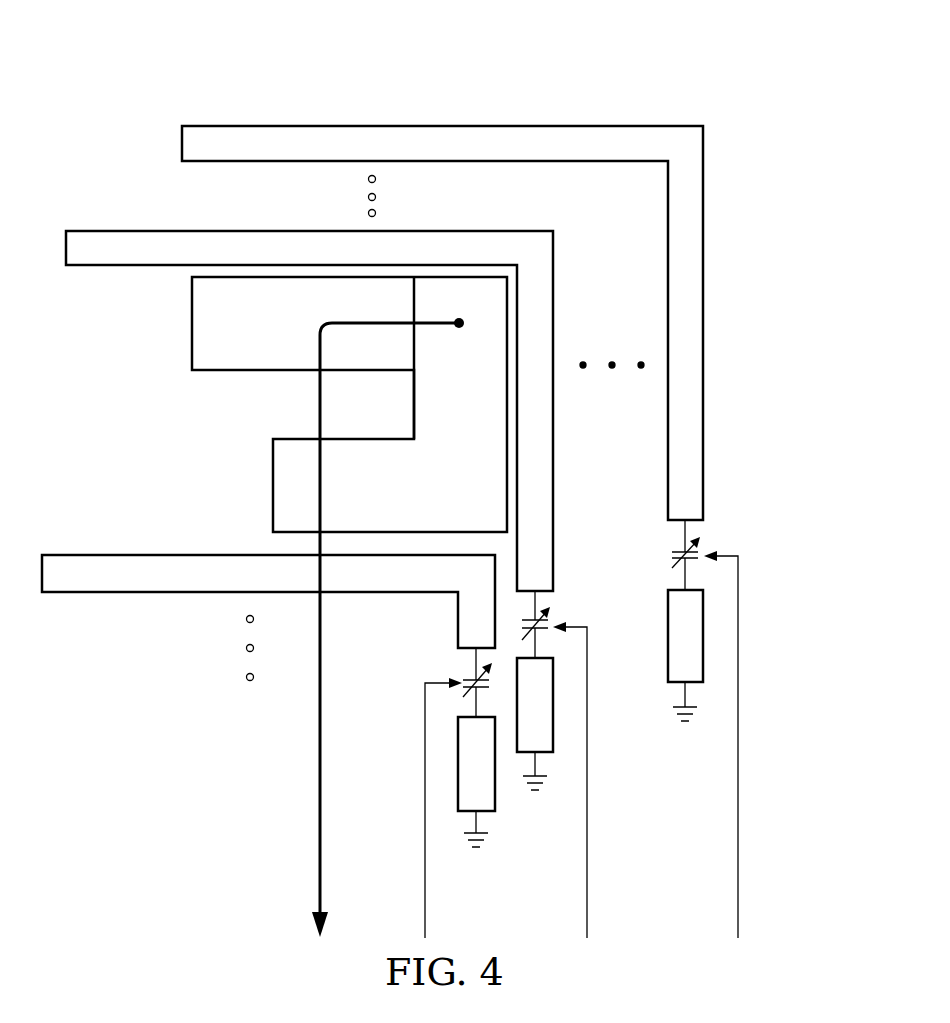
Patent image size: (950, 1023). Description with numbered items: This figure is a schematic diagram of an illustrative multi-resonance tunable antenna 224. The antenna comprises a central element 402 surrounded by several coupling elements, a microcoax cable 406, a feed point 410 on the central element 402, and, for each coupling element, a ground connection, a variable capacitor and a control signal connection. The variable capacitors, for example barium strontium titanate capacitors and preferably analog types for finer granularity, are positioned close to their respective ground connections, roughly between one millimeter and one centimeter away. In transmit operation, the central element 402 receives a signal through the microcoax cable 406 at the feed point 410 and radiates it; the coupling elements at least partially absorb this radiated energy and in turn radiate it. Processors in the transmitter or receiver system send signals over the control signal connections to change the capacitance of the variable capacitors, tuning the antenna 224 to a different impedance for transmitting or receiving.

The tunable antenna 224 is at (252, 86).
The central element 402 is at (273, 487).
The microcoax cable 406 is at (318, 781).
The feed point 410 is at (462, 330).